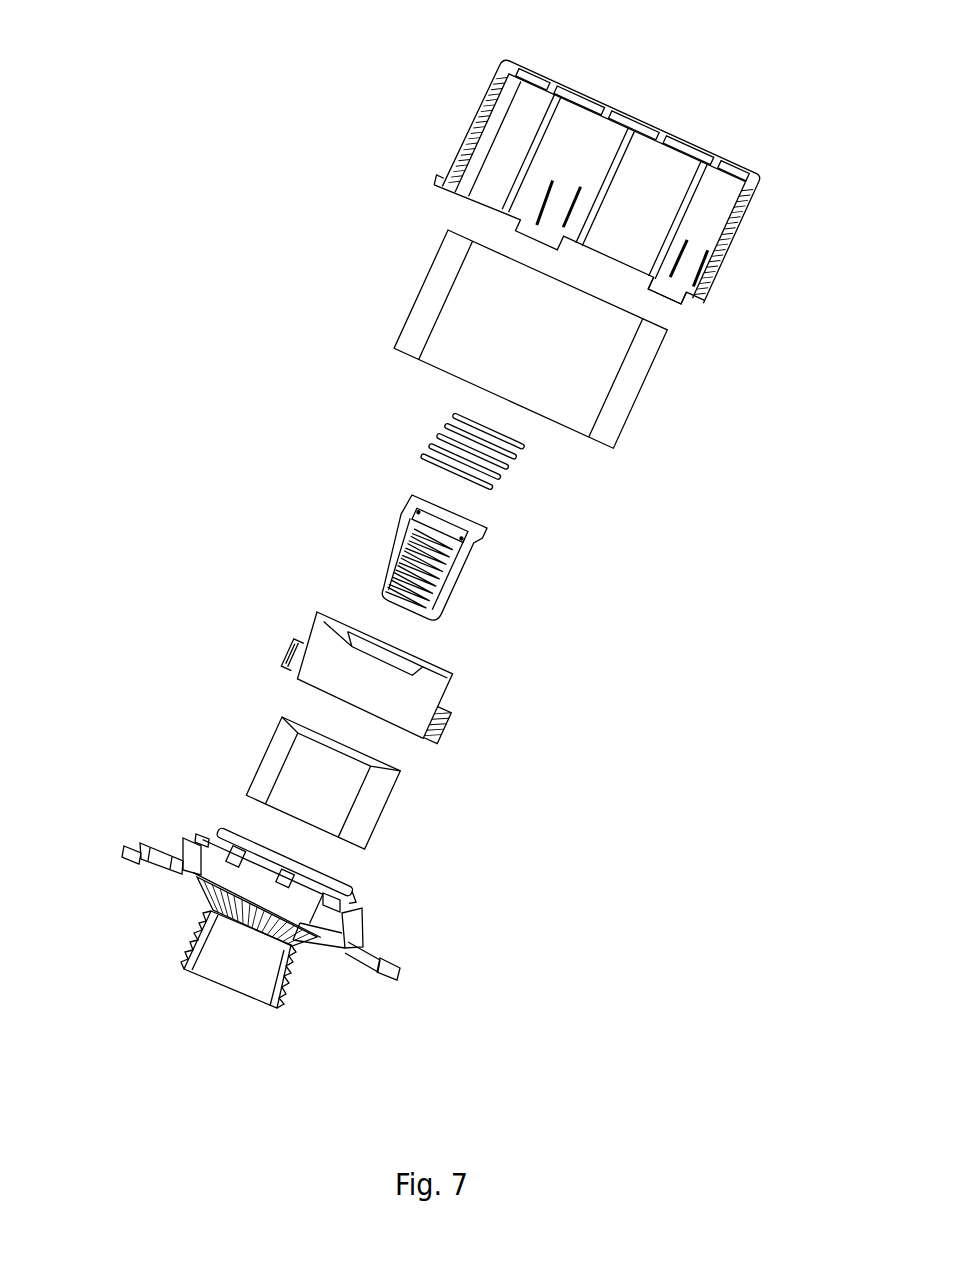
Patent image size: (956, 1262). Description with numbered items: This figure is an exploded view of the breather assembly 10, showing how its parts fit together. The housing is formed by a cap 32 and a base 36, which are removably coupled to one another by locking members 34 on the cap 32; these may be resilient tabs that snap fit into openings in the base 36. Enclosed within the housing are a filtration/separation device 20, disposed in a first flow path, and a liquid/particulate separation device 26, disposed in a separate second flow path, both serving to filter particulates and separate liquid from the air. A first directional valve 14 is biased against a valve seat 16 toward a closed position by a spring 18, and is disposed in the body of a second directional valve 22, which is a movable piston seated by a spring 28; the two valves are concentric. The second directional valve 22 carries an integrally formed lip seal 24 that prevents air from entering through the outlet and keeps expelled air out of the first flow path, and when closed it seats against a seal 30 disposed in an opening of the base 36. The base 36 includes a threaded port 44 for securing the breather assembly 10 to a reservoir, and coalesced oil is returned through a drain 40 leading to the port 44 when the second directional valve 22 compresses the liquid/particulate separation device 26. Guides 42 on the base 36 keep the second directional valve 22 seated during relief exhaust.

The breather assembly 10 is at (326, 161).
The first directional valve 14 is at (458, 558).
The valve seat 16 is at (478, 537).
The spring 18 is at (402, 580).
The filtration/separation device 20 is at (643, 385).
The second directional valve 22 is at (447, 691).
The lip seal 24 is at (287, 653).
The liquid/particulate separation device 26 is at (385, 797).
The spring 28 is at (513, 452).
The seal 30 is at (350, 893).
The cap 32 is at (757, 170).
The locking members 34 is at (683, 308).
The base 36 is at (400, 972).
The drain 40 is at (297, 942).
The guides 42 is at (197, 842).
The port 44 is at (187, 943).